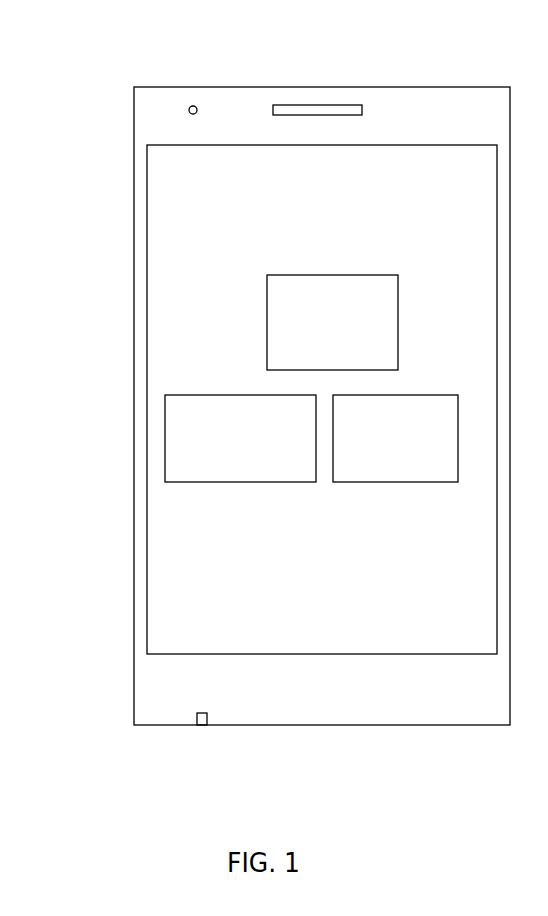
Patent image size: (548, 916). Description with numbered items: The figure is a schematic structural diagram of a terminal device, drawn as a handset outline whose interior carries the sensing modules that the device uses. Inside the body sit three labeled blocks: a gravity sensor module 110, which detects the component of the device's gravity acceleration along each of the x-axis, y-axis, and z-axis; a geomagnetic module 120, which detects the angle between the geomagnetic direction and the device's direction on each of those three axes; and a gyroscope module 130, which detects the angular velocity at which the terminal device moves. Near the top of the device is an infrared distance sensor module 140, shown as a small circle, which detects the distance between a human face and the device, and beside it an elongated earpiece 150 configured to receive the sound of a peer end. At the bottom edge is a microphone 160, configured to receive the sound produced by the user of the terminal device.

The gravity sensor module 110 is at (332, 322).
The geomagnetic module 120 is at (240, 438).
The gyroscope module 130 is at (395, 438).
The infrared distance sensor module 140 is at (183, 116).
The earpiece 150 is at (340, 93).
The microphone 160 is at (210, 731).